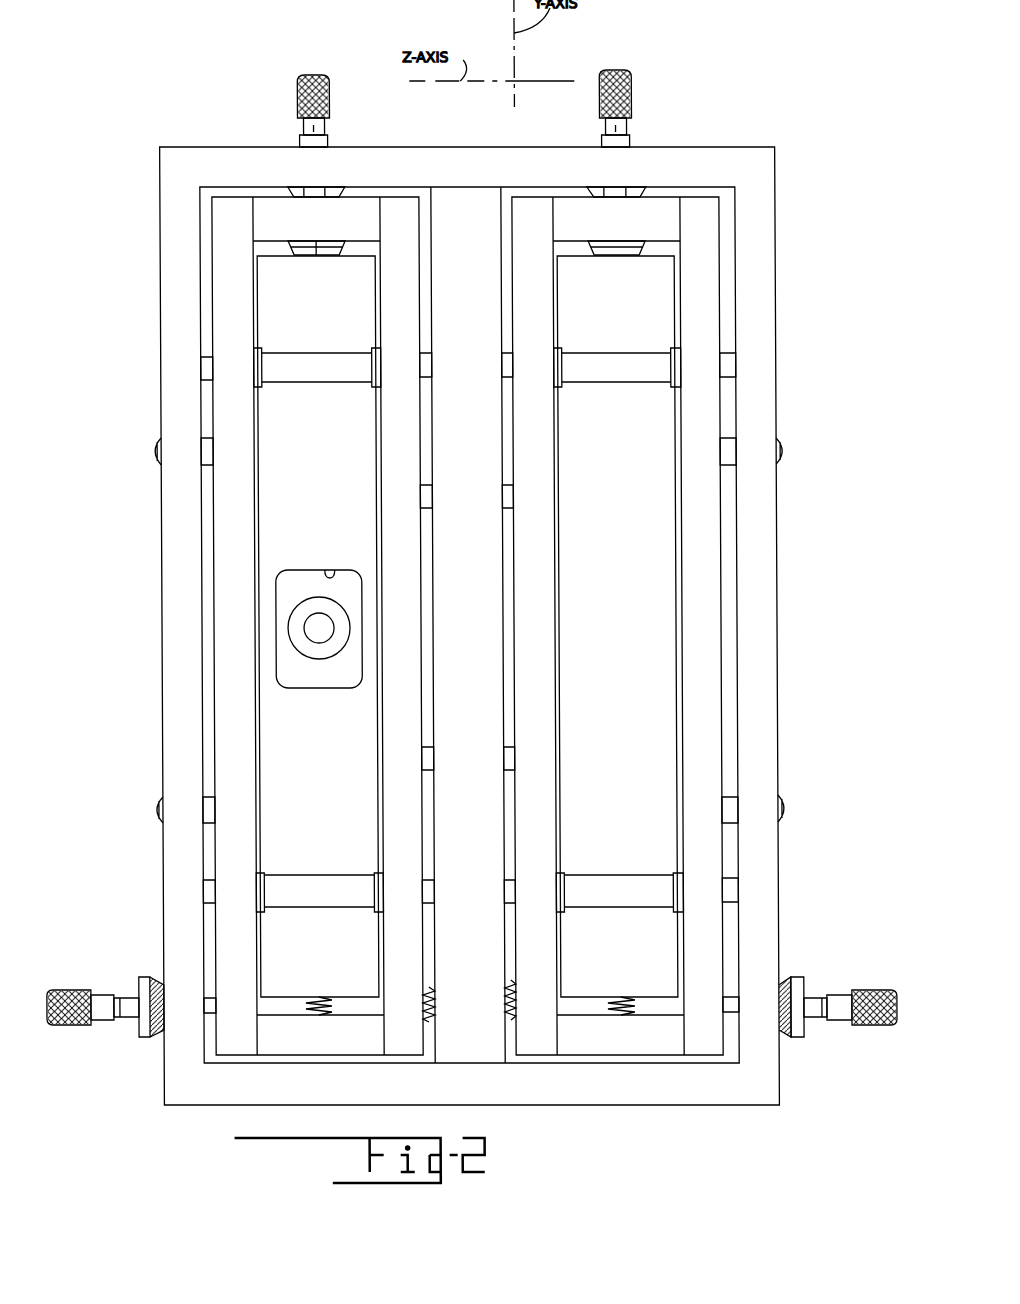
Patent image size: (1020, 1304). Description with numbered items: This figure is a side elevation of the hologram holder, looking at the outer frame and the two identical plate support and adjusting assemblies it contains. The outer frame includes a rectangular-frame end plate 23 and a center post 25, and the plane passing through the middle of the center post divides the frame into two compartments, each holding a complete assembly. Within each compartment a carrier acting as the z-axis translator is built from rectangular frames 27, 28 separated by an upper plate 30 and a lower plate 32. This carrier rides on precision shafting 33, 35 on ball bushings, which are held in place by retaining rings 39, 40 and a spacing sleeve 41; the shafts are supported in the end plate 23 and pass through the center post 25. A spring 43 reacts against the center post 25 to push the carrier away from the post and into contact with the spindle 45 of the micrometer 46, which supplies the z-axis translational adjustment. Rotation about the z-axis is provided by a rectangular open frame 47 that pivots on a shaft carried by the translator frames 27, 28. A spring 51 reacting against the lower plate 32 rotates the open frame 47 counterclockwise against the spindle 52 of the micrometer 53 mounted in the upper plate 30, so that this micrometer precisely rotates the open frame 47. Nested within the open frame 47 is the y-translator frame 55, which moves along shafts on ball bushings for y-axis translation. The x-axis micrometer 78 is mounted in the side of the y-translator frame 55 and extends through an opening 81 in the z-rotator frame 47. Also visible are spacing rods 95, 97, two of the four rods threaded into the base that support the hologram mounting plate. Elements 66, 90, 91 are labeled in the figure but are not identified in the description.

The end plate 23 is at (172, 592).
The center post 25 is at (468, 208).
The rectangular frame 27 is at (225, 712).
The rectangular frame 28 is at (408, 823).
The upper plate 30 is at (268, 222).
The lower plate 32 is at (280, 1032).
The shafting 33 is at (205, 369).
The shafting 35 is at (210, 893).
The retaining ring 39 is at (375, 385).
The retaining ring 40 is at (261, 388).
The spacing sleeve 41 is at (314, 358).
The spring 43 is at (437, 998).
The spindle 45 is at (205, 1005).
The micrometer 46 is at (98, 990).
The rectangular open frame 47 is at (363, 946).
The spring 51 is at (293, 997).
The spindle 52 is at (320, 256).
The micrometer 53 is at (300, 93).
The y-translator frame 55 is at (345, 594).
The shank 66 is at (333, 145).
The micrometer 78 is at (320, 632).
The opening 81 is at (330, 568).
The button 90 is at (152, 808).
The button 91 is at (152, 452).
The spacing rod 95 is at (433, 500).
The spacing rod 97 is at (433, 753).